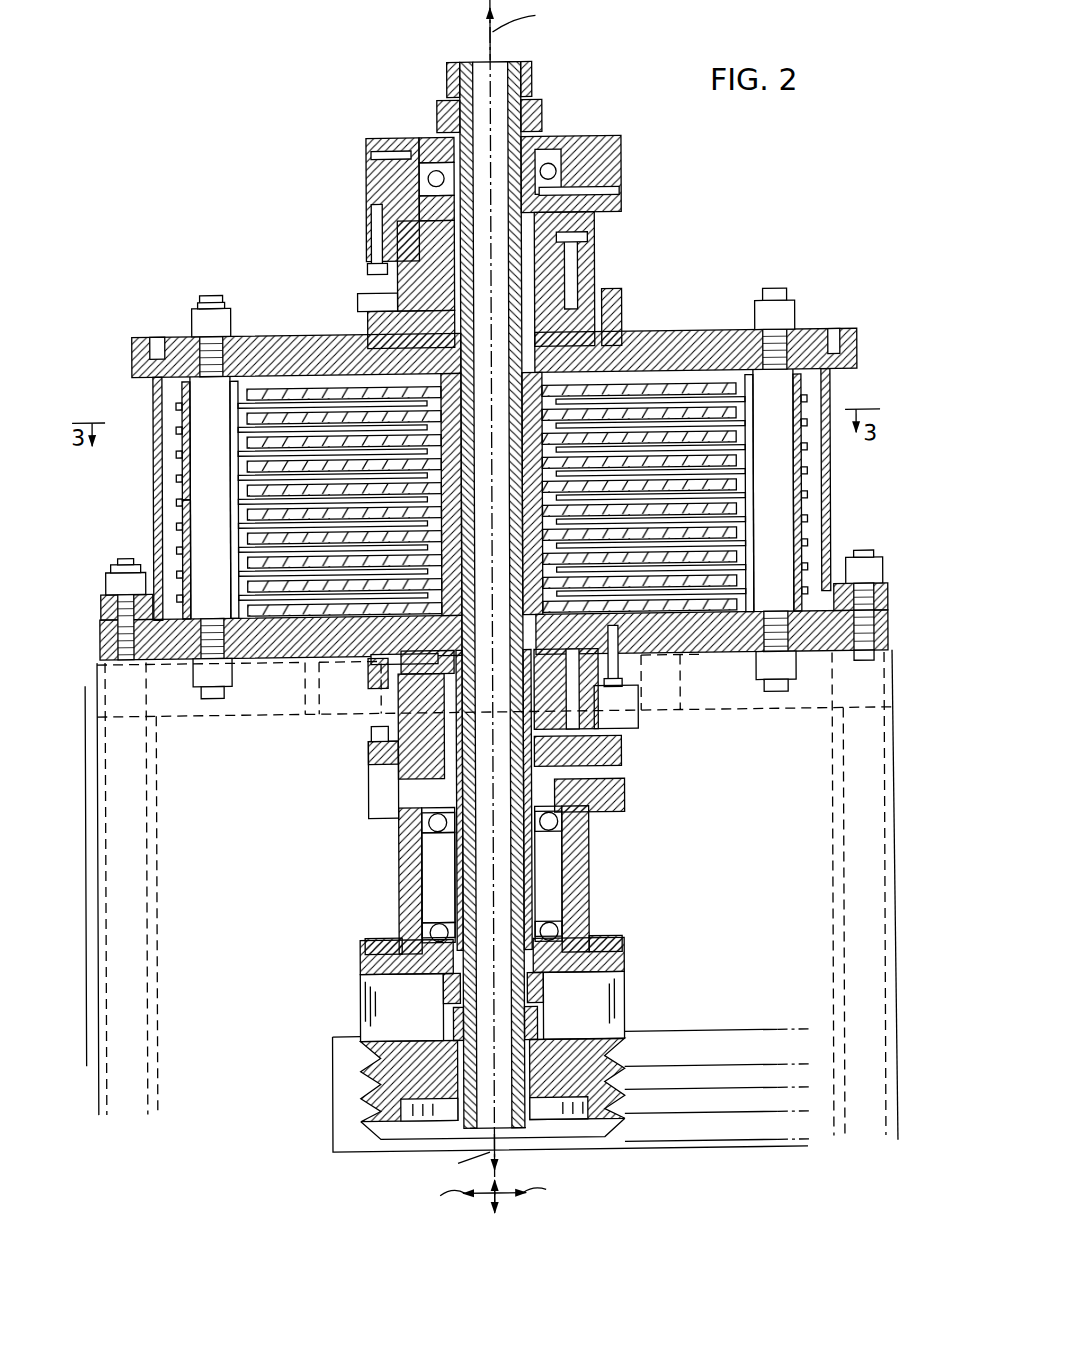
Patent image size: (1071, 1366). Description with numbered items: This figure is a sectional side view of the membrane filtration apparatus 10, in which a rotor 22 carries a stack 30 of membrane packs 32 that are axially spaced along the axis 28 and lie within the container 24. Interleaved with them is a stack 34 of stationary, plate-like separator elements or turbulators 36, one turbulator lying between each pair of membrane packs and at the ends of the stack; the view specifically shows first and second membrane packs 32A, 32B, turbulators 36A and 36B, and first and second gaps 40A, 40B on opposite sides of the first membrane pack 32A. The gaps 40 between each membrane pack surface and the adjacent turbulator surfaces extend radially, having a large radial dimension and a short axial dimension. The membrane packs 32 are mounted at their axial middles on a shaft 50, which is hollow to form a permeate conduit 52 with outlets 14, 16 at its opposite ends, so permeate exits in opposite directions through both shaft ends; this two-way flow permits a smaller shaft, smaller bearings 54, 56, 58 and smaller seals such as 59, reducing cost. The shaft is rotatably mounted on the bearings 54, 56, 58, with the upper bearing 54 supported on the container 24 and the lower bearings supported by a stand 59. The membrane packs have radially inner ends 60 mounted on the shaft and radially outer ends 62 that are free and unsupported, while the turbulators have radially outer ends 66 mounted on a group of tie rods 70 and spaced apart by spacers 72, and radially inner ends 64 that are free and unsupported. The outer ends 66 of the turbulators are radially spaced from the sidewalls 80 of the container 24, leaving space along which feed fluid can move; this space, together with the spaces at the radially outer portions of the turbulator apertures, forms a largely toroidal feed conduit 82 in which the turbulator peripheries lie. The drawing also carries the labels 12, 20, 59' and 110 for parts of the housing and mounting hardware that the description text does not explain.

The brake assembly 10 is at (280, 140).
The housing 12 is at (363, 291).
The outlet 14 is at (521, 62).
The outlet 16 is at (521, 1130).
The actuator block 20 is at (632, 700).
The rotor 22 is at (636, 373).
The container 24 is at (147, 397).
The axis 28 is at (496, 92).
The stack of membrane packs 30 is at (772, 380).
The membrane packs 32 is at (758, 490).
The first membrane pack 32A is at (243, 462).
The second membrane pack 32B is at (238, 500).
The stack of turbulators 34 is at (805, 397).
The turbulators 36 is at (806, 466).
The turbulator 36A is at (182, 427).
The turbulator 36B is at (190, 448).
The gaps 40 is at (758, 525).
The first gap 40A is at (272, 432).
The second gap 40B is at (290, 452).
The shaft 50 is at (436, 857).
The permeate conduit 52 is at (427, 887).
The bearing 54 is at (606, 168).
The bearing 56 is at (561, 823).
The bearing 58 is at (558, 922).
The stand 59 is at (471, 900).
The bolt 59' is at (617, 279).
The radially inner ends 60 is at (666, 660).
The radially outer ends 62 is at (712, 660).
The radially inner ends 64 is at (356, 660).
The radially outer ends 66 is at (242, 662).
The tie rods 70 is at (208, 298).
The spacers 72 is at (99, 614).
The sidewalls 80 is at (150, 398).
The feed conduit 82 is at (243, 376).
The carrier ring 110 is at (236, 560).